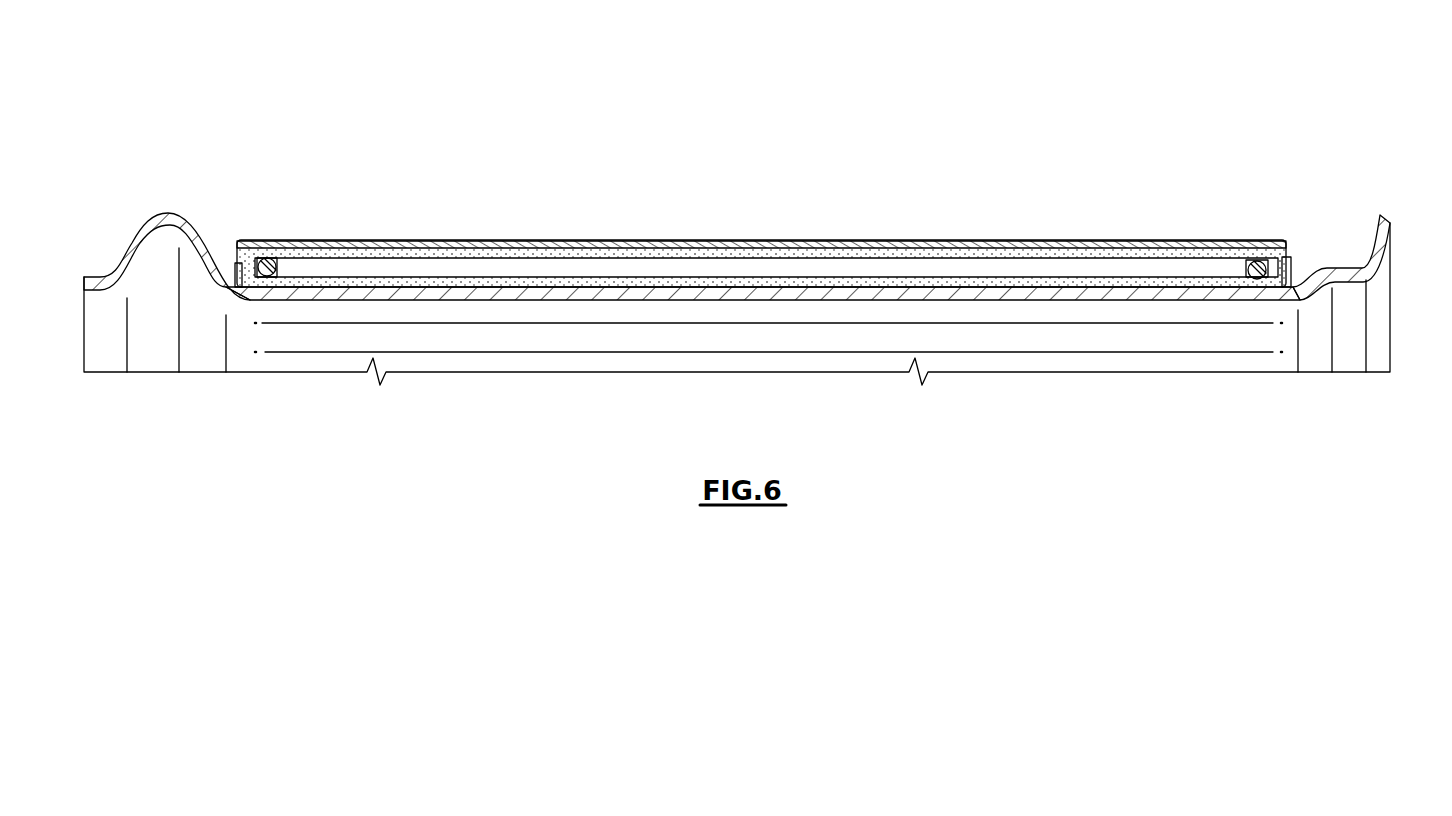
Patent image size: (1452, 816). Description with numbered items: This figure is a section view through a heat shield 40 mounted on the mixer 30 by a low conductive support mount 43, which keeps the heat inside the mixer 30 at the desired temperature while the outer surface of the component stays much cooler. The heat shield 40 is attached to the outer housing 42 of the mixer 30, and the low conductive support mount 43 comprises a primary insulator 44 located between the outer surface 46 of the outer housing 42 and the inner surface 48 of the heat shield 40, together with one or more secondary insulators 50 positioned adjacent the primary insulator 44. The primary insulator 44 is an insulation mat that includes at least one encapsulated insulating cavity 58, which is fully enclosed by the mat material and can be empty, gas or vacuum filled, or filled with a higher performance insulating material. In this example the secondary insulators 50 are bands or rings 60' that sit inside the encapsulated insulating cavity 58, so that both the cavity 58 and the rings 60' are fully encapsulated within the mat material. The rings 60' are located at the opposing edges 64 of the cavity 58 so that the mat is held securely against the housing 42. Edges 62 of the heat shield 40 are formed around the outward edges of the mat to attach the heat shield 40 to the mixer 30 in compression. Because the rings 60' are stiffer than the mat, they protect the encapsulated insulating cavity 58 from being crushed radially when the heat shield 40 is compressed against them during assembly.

The mixer 30 is at (964, 99).
The heat shield 40 is at (568, 242).
The outer housing 42 is at (1383, 233).
The low conductive support mount 43 is at (192, 196).
The primary insulator 44 is at (1132, 249).
The outer surface 46 is at (1297, 290).
The inner surface 48 is at (668, 242).
The secondary insulator 50 is at (284, 268).
The encapsulated insulating cavity 58 is at (1000, 258).
The rings 60' is at (762, 228).
The edges of the heat shield 62 is at (236, 262).
The opposing edges of the cavity 64 is at (258, 262).